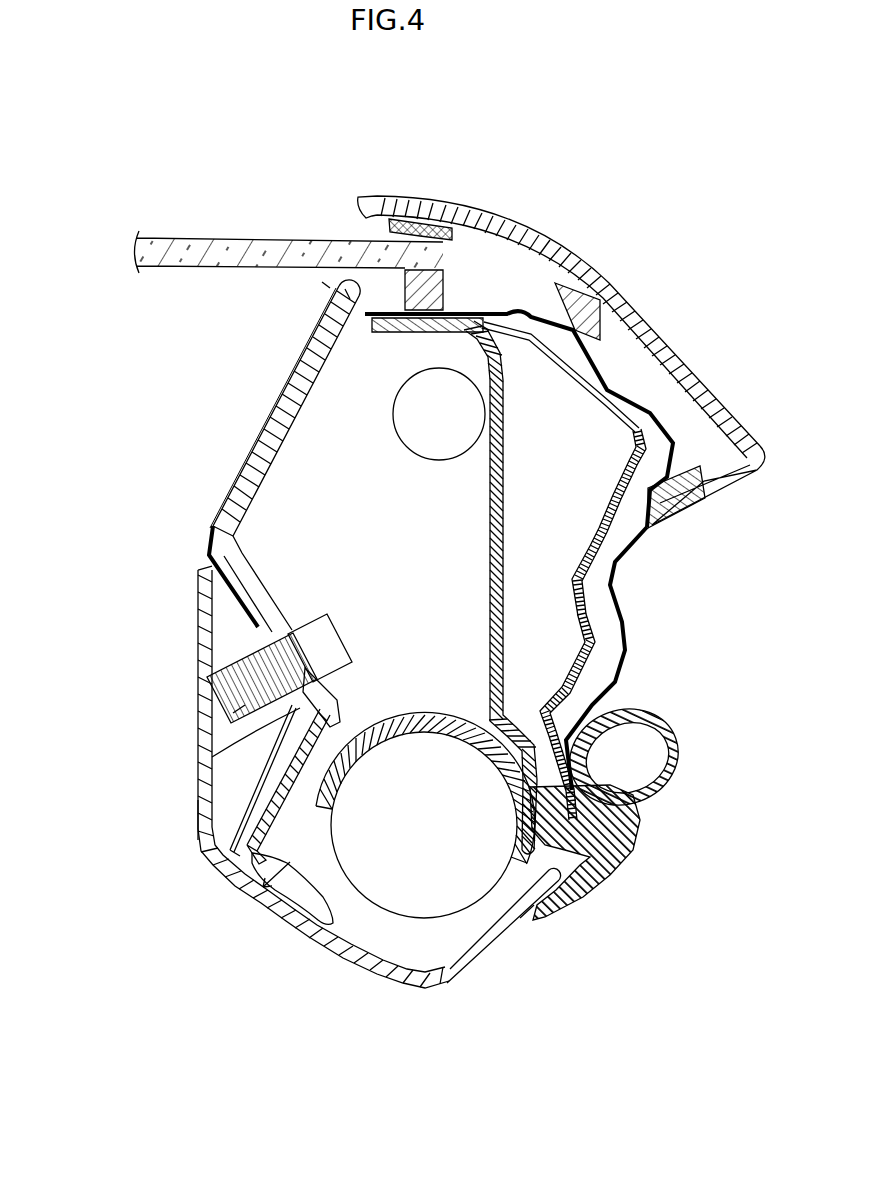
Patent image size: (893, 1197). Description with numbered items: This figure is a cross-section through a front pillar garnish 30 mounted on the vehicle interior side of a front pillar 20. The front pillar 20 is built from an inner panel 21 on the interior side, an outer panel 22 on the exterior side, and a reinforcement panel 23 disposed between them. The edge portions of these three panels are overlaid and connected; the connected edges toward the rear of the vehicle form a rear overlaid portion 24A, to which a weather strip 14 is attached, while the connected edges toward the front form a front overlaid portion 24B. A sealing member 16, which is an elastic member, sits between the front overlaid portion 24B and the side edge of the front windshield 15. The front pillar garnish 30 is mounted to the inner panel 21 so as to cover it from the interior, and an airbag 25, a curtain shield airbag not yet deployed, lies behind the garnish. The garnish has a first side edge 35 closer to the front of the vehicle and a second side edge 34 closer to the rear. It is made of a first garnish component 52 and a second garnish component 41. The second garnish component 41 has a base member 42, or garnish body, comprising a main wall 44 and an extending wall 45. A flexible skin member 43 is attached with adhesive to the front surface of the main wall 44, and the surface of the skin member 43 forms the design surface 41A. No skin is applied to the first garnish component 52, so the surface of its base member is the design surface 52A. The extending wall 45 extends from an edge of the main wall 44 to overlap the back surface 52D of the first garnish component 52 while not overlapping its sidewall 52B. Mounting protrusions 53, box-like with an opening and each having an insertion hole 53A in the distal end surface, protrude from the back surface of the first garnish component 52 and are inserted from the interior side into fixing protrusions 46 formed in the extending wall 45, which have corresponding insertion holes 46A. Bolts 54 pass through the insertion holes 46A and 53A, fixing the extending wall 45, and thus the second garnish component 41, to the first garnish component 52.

The weather strip 14 is at (636, 835).
The front windshield 15 is at (218, 243).
The sealing member 16 is at (466, 300).
The front pillar 20 is at (740, 262).
The inner panel 21 is at (500, 473).
The outer panel 22 is at (565, 435).
The reinforcement panel 23 is at (634, 375).
The rear overlaid portion 24A is at (593, 773).
The front overlaid portion 24B is at (470, 305).
The airbag 25 is at (442, 893).
The front pillar garnish 30 is at (198, 883).
The second side edge 34 is at (527, 913).
The first side edge 35 is at (327, 287).
The second garnish component 41 is at (184, 435).
The design surface 41A is at (304, 343).
The base member 42 is at (183, 457).
The skin member 43 is at (277, 398).
The main wall 44 is at (250, 472).
The extending wall 45 is at (236, 580).
The fixing protrusion 46 is at (313, 690).
The insertion hole 46A is at (310, 667).
The first garnish component 52 is at (197, 647).
The design surface 52A is at (197, 828).
The sidewall 52B is at (500, 940).
The back surface 52D is at (310, 853).
The mounting protrusion 53 is at (212, 757).
The insertion hole 53A is at (233, 713).
The bolt 54 is at (303, 620).